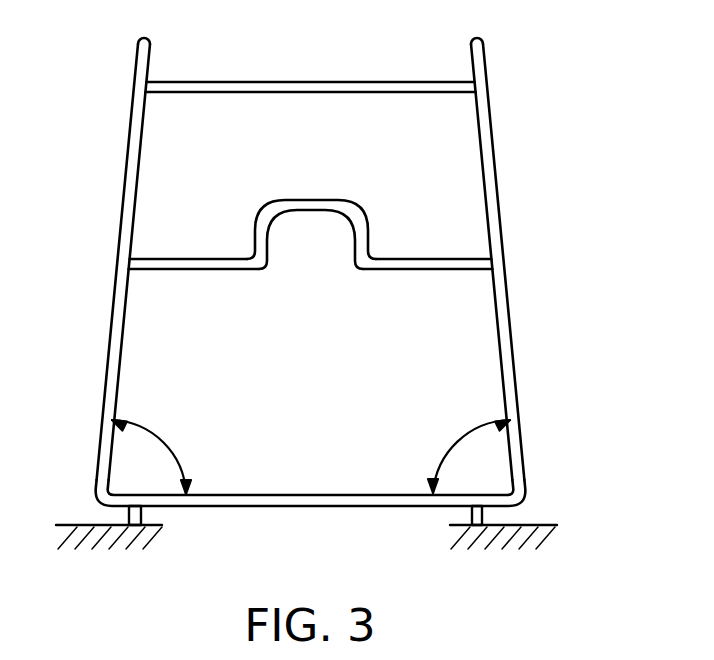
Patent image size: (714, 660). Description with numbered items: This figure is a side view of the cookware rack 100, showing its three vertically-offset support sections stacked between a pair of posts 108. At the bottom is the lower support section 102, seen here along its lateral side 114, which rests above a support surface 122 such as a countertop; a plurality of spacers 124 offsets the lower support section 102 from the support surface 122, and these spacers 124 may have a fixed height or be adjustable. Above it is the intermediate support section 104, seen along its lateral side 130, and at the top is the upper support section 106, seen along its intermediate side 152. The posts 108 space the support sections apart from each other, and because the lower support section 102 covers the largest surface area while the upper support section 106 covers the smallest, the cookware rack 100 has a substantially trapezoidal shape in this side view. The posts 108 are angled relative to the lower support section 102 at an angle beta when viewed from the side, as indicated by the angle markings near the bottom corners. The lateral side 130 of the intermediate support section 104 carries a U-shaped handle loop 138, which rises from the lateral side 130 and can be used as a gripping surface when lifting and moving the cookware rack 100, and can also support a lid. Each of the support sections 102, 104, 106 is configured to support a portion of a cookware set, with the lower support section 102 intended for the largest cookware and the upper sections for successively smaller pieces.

The cookware rack 100 is at (563, 123).
The lower support section 102 is at (307, 517).
The intermediate support section 104 is at (402, 282).
The upper support section 106 is at (403, 98).
The posts 108 is at (125, 189).
The lateral side 114 is at (277, 497).
The support surface 122 is at (89, 523).
The spacers 124 is at (142, 513).
The lateral side 130 is at (311, 212).
The handle loop 138 is at (317, 202).
The intermediate side 152 is at (298, 88).